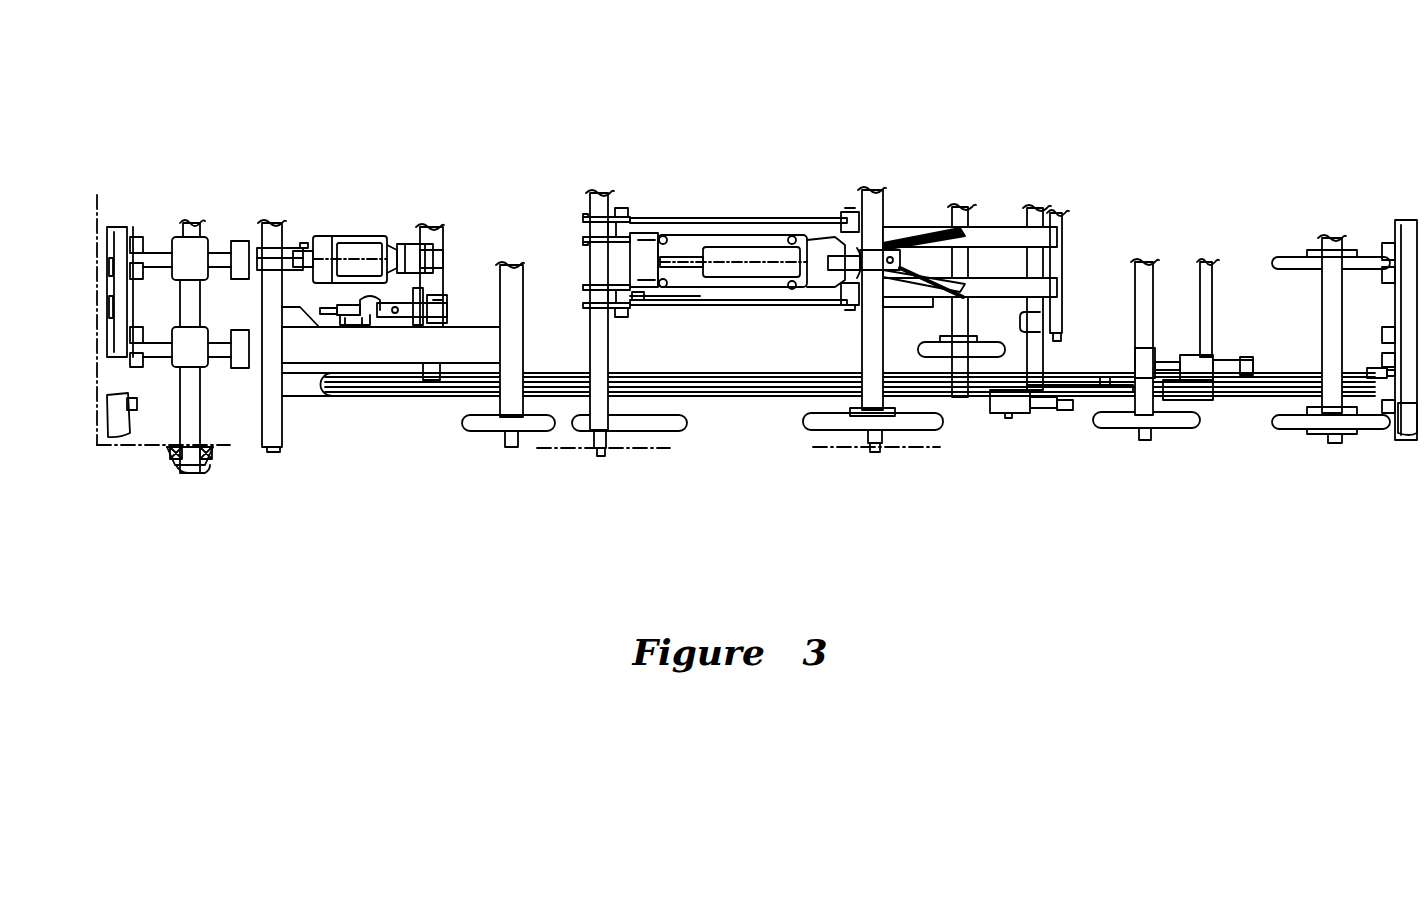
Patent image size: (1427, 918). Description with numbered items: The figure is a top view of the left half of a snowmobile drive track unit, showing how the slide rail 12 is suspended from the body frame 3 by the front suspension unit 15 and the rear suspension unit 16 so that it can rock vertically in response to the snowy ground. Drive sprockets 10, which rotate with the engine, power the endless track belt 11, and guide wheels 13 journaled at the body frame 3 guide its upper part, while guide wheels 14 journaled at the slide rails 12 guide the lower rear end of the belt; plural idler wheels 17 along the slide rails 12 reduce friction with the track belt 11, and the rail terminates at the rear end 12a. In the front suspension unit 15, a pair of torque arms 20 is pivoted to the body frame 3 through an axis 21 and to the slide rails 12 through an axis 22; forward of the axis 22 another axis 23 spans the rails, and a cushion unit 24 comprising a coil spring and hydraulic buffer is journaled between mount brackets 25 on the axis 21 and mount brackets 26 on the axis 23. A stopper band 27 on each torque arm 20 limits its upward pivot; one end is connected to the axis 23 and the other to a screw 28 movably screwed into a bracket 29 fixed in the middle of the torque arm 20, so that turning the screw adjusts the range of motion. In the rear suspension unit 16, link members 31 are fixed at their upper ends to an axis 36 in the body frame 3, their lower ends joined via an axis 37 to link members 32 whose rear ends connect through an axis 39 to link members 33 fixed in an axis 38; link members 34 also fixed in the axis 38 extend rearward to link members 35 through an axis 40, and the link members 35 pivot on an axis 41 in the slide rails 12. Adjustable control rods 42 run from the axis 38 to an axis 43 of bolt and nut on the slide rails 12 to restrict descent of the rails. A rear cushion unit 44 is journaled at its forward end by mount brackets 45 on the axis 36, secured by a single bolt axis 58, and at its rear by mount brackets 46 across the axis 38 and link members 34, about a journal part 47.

The body frame 3 is at (300, 450).
The drive sprockets 10 is at (152, 390).
The track belt 11 is at (115, 440).
The slide rails 12 is at (745, 400).
The rail end 12a is at (1240, 385).
The guide wheels 13 is at (812, 425).
The guide wheels 14 is at (1293, 430).
The front suspension unit 15 is at (380, 132).
The rear suspension unit 16 is at (826, 165).
The idler wheels 17 is at (485, 432).
The torque arms 20 is at (475, 330).
The axis 21 is at (268, 238).
The axis 22 is at (505, 262).
The axis 23 is at (432, 232).
The cushion unit 24 is at (355, 235).
The mount brackets 25 is at (290, 232).
The mount brackets 26 is at (412, 240).
The stopper band 27 is at (384, 374).
The screw 28 is at (358, 330).
The bracket 29 is at (343, 325).
The link members 31 is at (625, 308).
The link members 32 is at (717, 305).
The link members 33 is at (853, 308).
The link members 34 is at (980, 287).
The link members 35 is at (1053, 350).
The axis 36 is at (598, 200).
The axis 37 is at (598, 290).
The axis 38 is at (880, 200).
The axis 39 is at (843, 215).
The axis 40 is at (1060, 220).
The axis 41 is at (1035, 210).
The control rods 42 is at (1010, 415).
The axis 43 is at (1100, 405).
The cushion unit 44 is at (758, 265).
The mount brackets 45 is at (585, 243).
The mount brackets 46 is at (920, 270).
The journal part 47 is at (868, 280).
The bolt axis 58 is at (636, 228).